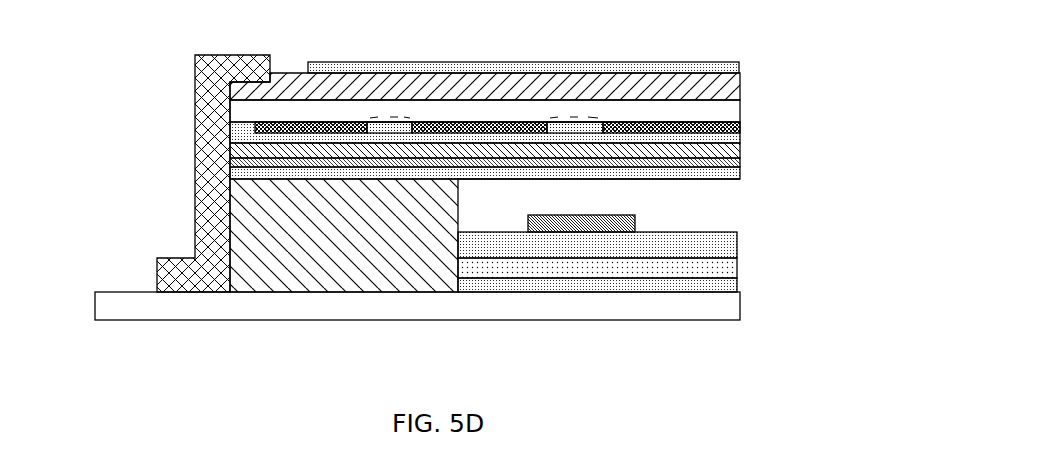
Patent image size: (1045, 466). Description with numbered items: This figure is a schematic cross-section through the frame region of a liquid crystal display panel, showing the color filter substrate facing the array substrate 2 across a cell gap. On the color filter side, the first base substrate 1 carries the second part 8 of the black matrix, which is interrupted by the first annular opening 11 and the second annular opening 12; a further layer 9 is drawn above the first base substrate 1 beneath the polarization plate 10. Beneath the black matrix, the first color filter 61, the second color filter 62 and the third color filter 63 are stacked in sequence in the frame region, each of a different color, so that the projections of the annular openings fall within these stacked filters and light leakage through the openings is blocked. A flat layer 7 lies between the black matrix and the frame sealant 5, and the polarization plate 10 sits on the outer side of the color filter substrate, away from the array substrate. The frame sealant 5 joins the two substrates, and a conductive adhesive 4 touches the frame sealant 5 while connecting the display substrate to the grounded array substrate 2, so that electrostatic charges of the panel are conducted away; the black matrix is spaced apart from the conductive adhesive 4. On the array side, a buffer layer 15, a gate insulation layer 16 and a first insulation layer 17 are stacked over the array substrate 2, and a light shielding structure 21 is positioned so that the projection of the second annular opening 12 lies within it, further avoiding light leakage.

The first base substrate 1 is at (730, 110).
The array substrate 2 is at (130, 303).
The conductive adhesive 4 is at (203, 128).
The frame sealant 5 is at (433, 262).
The flat layer 7 is at (662, 175).
The second part of the black matrix 8 is at (741, 125).
The upper substrate 9 is at (741, 77).
The polarization plate 10 is at (607, 67).
The first annular opening 11 is at (382, 117).
The second annular opening 12 is at (566, 117).
The buffer layer 15 is at (738, 288).
The gate insulation layer 16 is at (738, 263).
The first insulation layer 17 is at (738, 245).
The light shielding structure 21 is at (583, 232).
The first color filter 61 is at (741, 148).
The second color filter 62 is at (741, 160).
The third color filter 63 is at (695, 165).